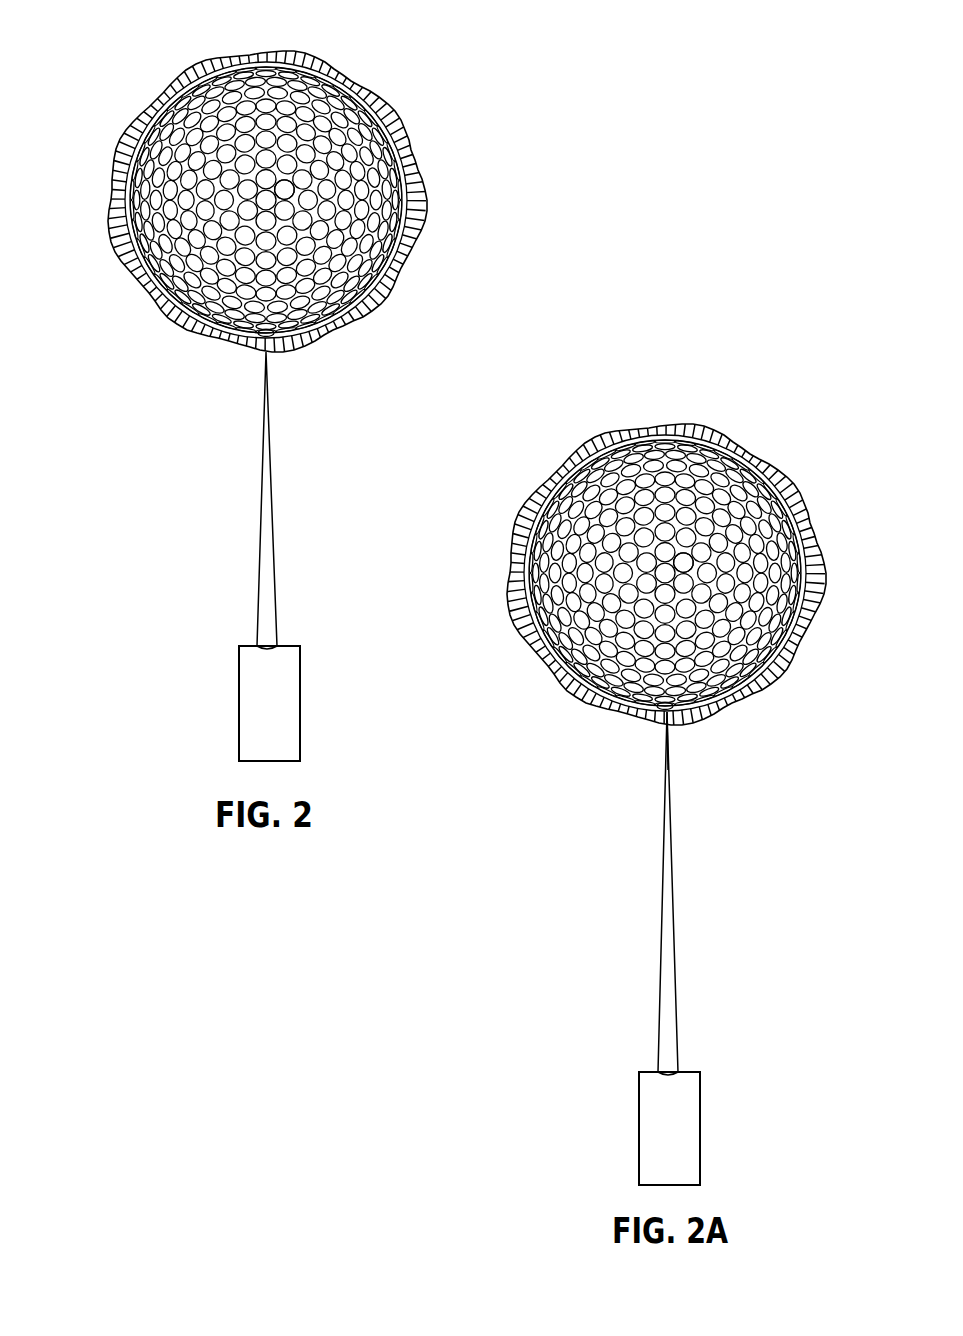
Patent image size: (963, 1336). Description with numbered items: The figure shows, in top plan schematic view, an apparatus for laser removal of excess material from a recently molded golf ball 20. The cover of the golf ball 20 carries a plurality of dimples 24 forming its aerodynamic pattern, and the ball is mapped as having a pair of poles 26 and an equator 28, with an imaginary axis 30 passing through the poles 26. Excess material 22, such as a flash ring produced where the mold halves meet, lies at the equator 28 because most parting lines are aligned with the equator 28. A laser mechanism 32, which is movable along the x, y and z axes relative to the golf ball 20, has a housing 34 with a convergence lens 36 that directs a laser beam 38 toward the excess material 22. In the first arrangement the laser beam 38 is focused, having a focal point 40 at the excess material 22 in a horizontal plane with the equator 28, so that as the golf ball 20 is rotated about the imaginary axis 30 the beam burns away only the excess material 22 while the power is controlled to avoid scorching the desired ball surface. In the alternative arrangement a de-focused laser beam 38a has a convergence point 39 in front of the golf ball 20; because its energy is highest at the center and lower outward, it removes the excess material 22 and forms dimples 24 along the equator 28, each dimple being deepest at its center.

In FIG. 2, the golf ball 20 is at (264, 206).
In FIG. 2A, the golf ball 20 is at (666, 581).
In FIG. 2, the excess material 22 is at (408, 257).
In FIG. 2A, the excess material 22 is at (812, 636).
In FIG. 2, the dimples 24 is at (168, 252).
In FIG. 2A, the dimples 24 is at (570, 627).
In FIG. 2, the poles 26 is at (263, 196).
In FIG. 2A, the poles 26 is at (664, 569).
In FIG. 2, the equator 28 is at (418, 196).
In FIG. 2A, the equator 28 is at (818, 571).
In FIG. 2, the imaginary axis 30 is at (272, 194).
In FIG. 2A, the imaginary axis 30 is at (672, 567).
In FIG. 2, the laser mechanism 32 is at (236, 676).
In FIG. 2A, the laser mechanism 32 is at (634, 1102).
In FIG. 2, the housing 34 is at (248, 711).
In FIG. 2A, the housing 34 is at (648, 1136).
In FIG. 2, the convergence lens 36 is at (280, 646).
In FIG. 2A, the convergence lens 36 is at (680, 1072).
In FIG. 2, the laser beam 38 is at (268, 512).
In FIG. 2A, the de-focused laser beam 38a is at (667, 912).
In FIG. 2A, the convergence point 39 is at (668, 755).
In FIG. 2, the focal point 40 is at (263, 345).
In FIG. 2A, the focal point 40 is at (661, 715).